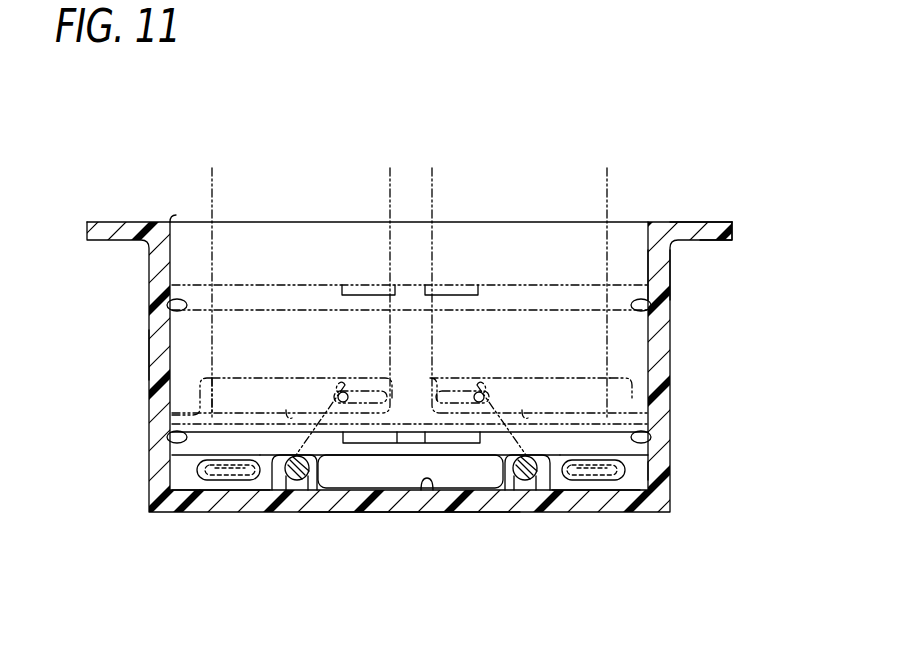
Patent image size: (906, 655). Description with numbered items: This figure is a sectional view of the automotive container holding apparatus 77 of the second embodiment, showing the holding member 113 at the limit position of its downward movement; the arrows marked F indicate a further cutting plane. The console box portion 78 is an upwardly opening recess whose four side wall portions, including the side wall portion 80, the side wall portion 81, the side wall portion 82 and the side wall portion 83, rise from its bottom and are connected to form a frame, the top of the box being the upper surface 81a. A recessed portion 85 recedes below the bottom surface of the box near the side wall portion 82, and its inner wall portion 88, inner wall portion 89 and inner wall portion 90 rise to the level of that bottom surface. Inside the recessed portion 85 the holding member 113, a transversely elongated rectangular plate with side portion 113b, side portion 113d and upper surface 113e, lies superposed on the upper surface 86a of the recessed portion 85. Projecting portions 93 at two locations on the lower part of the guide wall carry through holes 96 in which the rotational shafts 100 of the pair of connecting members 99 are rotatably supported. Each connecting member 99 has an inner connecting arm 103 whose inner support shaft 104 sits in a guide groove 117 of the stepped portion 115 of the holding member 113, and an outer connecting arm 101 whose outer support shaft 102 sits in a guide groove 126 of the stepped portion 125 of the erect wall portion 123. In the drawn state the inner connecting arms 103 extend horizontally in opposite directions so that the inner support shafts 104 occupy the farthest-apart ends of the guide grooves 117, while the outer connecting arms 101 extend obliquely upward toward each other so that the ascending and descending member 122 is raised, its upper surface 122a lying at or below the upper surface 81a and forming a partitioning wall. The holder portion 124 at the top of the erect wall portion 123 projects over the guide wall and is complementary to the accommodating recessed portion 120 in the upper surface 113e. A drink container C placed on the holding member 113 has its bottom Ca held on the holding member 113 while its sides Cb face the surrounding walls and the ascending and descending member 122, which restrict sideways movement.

The automotive container holding apparatus 77 is at (205, 155).
The console box portion 78 is at (735, 220).
The side wall portion 80 is at (650, 494).
The side wall portion 81 is at (172, 306).
The upper surface of console box portion 81a is at (699, 222).
The side wall portion 82 is at (628, 268).
The side wall portion 83 is at (632, 305).
The recessed portion 85 is at (642, 472).
The upper surface of recessed portion 86a is at (428, 488).
The inner wall portion 88 is at (172, 437).
The inner wall portion 89 is at (628, 400).
The inner wall portion 90 is at (636, 438).
The projecting portions 93 is at (287, 482).
The through holes 96 is at (297, 481).
The connecting members 99 is at (208, 492).
The rotational shaft 100 is at (312, 470).
The outer connecting arm 101 is at (290, 440).
The outer support shaft 102 is at (319, 390).
The inner connecting arm 103 is at (250, 483).
The inner support shaft 104 is at (232, 462).
The holding member 113 is at (405, 492).
The side portion 113b is at (182, 463).
The side portion 113d is at (655, 450).
The upper surface 113e is at (190, 412).
The stepped portion 115 is at (172, 490).
The guide grooves 117 is at (230, 478).
The accommodating recessed portion 120 is at (412, 443).
The ascending and descending member 122 is at (548, 283).
The upper surface of ascending and descending member 122a is at (265, 284).
The erect wall portion 123 is at (168, 356).
The holder portion 124 is at (358, 285).
The stepped portion 125 is at (655, 380).
The guide grooves 126 is at (368, 392).
The drink container C is at (205, 180).
The bottom of container Ca is at (287, 410).
The sides of container Cb is at (208, 240).
The section F is at (412, 175).